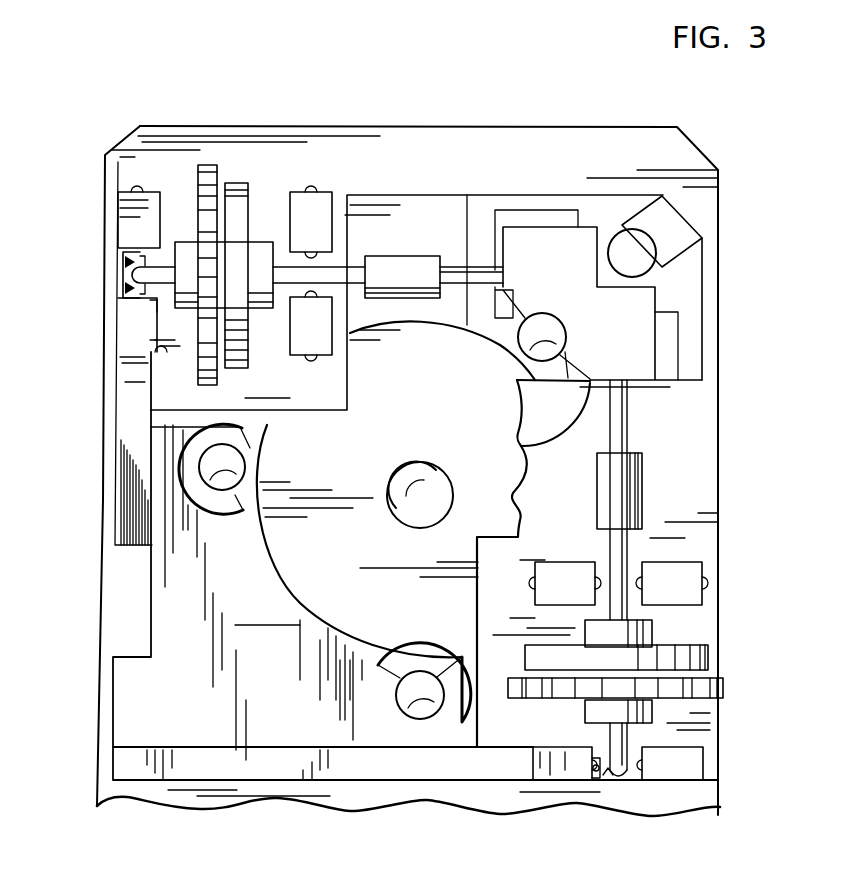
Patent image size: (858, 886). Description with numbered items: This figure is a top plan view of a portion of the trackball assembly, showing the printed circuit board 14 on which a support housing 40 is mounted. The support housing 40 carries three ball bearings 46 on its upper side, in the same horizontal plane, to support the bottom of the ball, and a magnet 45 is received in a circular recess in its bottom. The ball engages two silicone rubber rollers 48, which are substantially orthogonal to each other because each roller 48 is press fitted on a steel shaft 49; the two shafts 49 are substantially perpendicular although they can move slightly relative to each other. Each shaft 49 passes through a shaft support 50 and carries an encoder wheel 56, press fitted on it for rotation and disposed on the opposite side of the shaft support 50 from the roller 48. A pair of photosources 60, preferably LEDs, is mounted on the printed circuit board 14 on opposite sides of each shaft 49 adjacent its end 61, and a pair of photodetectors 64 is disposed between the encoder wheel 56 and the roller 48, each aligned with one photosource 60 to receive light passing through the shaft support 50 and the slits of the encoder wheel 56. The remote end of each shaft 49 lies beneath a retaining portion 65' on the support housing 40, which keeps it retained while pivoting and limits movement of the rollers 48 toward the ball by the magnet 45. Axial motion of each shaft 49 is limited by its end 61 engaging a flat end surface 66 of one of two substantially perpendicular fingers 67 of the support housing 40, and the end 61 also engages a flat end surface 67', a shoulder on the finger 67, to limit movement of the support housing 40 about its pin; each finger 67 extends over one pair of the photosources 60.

The printed circuit board 14 is at (720, 507).
The support housing 40 is at (113, 690).
The magnet 45 is at (620, 404).
The ball bearings 46 is at (257, 467).
The rollers 48 is at (392, 256).
The shaft 49 is at (477, 265).
The shaft support 50 is at (237, 183).
The encoder wheel 56 is at (206, 165).
The photosources 60 is at (120, 192).
The end 61 is at (160, 268).
The photodetectors 64 is at (331, 195).
The retaining portion 65' is at (695, 288).
The flat end surface 66 is at (123, 252).
The fingers 67 is at (329, 571).
The flat end surface 67' is at (314, 580).